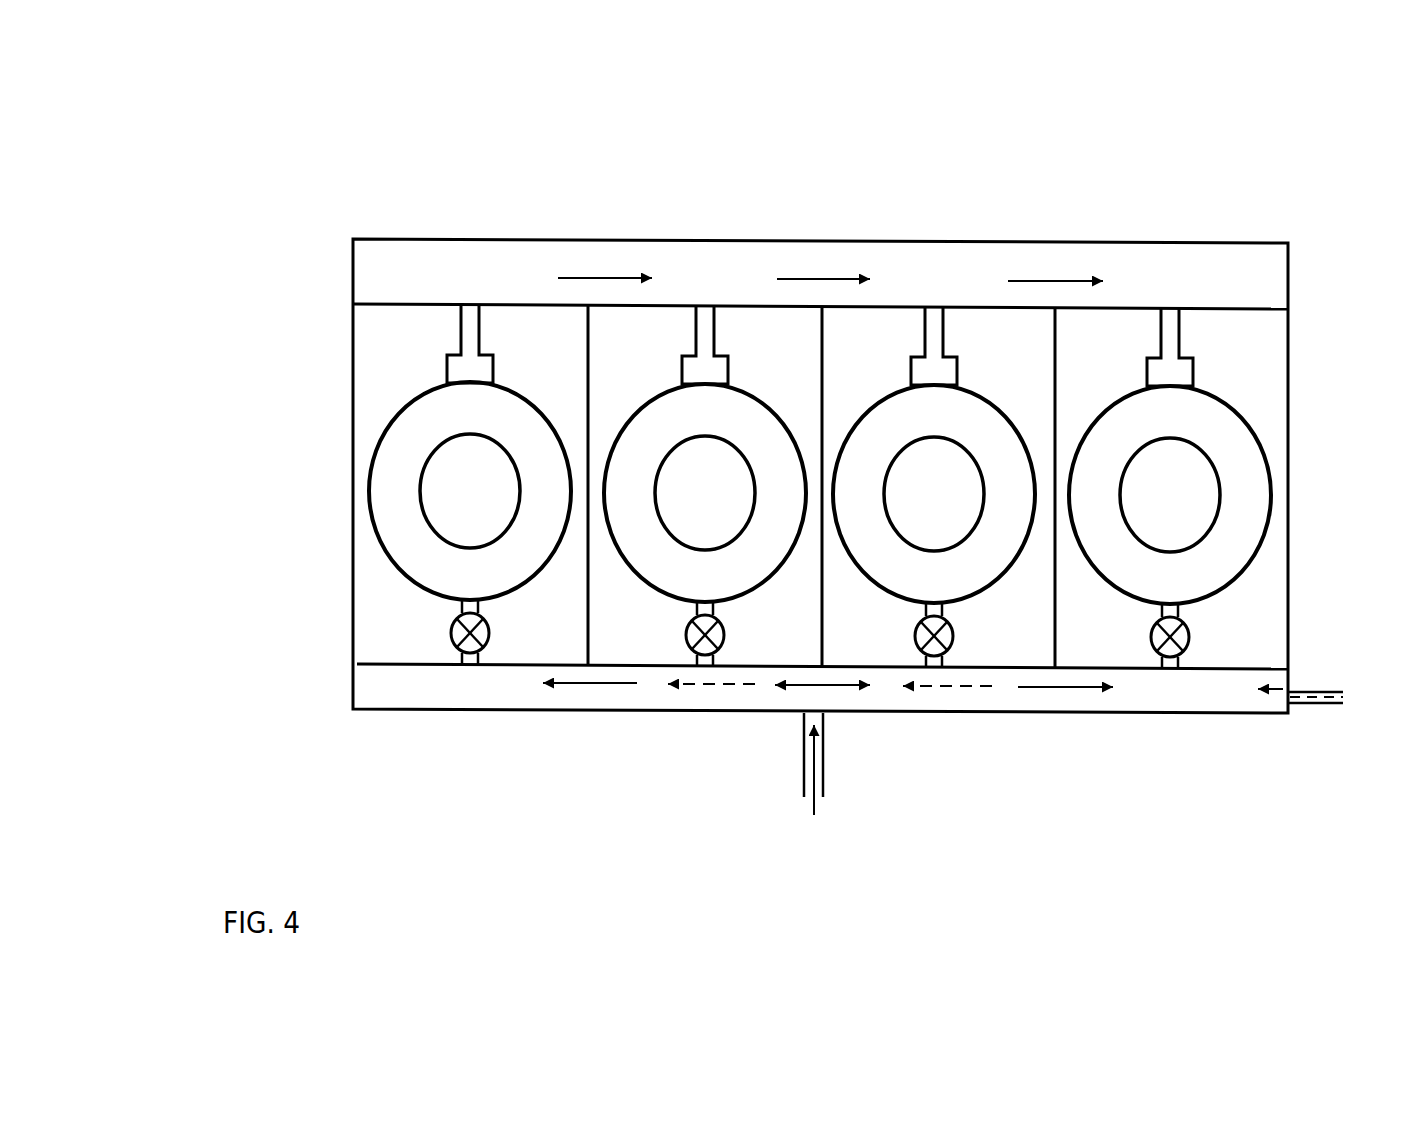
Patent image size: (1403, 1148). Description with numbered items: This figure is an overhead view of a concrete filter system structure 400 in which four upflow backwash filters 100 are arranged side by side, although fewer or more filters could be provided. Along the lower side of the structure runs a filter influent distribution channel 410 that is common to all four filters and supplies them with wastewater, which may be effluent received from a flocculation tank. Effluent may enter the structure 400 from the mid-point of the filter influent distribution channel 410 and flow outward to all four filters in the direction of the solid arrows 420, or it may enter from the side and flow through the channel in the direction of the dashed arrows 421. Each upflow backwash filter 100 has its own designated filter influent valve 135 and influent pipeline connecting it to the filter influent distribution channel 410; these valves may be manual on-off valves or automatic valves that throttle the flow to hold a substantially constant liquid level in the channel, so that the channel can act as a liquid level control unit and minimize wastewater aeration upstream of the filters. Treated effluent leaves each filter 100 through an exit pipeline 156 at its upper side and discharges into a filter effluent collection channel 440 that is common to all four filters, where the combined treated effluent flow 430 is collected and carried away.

The concrete filter system structure 400 is at (424, 155).
The upflow backwash filter 100 is at (387, 432).
The filter influent valve 135 is at (460, 643).
The exit pipeline 156 is at (470, 320).
The filter influent distribution channel 410 is at (368, 690).
The solid arrows 420 is at (813, 786).
The dashed arrows 421 is at (1005, 773).
The combined treated effluent flow 430 is at (830, 179).
The filter effluent collection channel 440 is at (920, 260).